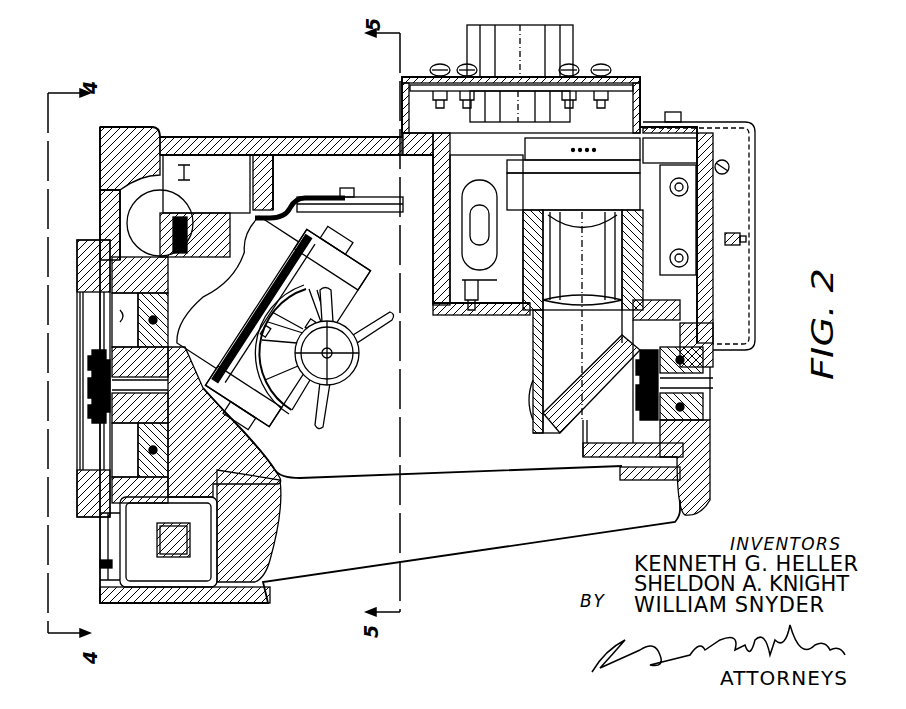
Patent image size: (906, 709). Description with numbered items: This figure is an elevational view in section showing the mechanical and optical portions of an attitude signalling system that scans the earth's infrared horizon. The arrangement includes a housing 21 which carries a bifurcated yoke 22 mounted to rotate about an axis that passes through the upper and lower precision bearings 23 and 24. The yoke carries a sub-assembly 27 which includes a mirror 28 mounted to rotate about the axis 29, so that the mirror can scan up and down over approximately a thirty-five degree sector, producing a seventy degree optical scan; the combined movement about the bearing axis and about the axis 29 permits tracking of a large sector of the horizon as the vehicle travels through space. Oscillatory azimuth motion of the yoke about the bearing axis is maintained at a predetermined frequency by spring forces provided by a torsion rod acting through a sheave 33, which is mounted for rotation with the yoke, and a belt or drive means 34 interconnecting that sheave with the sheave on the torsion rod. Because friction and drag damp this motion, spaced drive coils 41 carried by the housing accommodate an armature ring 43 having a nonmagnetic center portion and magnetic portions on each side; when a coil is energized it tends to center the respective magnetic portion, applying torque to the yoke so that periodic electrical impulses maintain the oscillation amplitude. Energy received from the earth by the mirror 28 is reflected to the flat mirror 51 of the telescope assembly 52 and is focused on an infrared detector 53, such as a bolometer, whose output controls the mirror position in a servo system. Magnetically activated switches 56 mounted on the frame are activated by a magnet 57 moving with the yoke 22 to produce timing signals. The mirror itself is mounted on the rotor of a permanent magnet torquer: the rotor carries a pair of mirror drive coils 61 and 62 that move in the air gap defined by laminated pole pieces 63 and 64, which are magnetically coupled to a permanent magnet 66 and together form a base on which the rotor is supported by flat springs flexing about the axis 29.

The housing 21 is at (252, 137).
The bifurcated yoke 22 is at (273, 533).
The upper precision bearing 23 is at (140, 427).
The lower precision bearing 24 is at (687, 420).
The sub-assembly 27 is at (281, 430).
The mirror 28 is at (367, 360).
The axis 29 is at (334, 362).
The sheave 33 is at (93, 352).
The belt or drive means 34 is at (92, 280).
The drive coils 41 is at (147, 573).
The armature ring 43 is at (180, 563).
The flat mirror 51 is at (565, 422).
The telescope assembly 52 is at (512, 372).
The infrared detector 53 is at (577, 220).
The magnetically activated switches 56 is at (730, 168).
The magnet 57 is at (746, 240).
The mirror drive coil 61 is at (289, 400).
The mirror drive coil 62 is at (385, 301).
The laminated pole piece 63 is at (318, 258).
The laminated pole piece 64 is at (220, 360).
The permanent magnet 66 is at (206, 372).